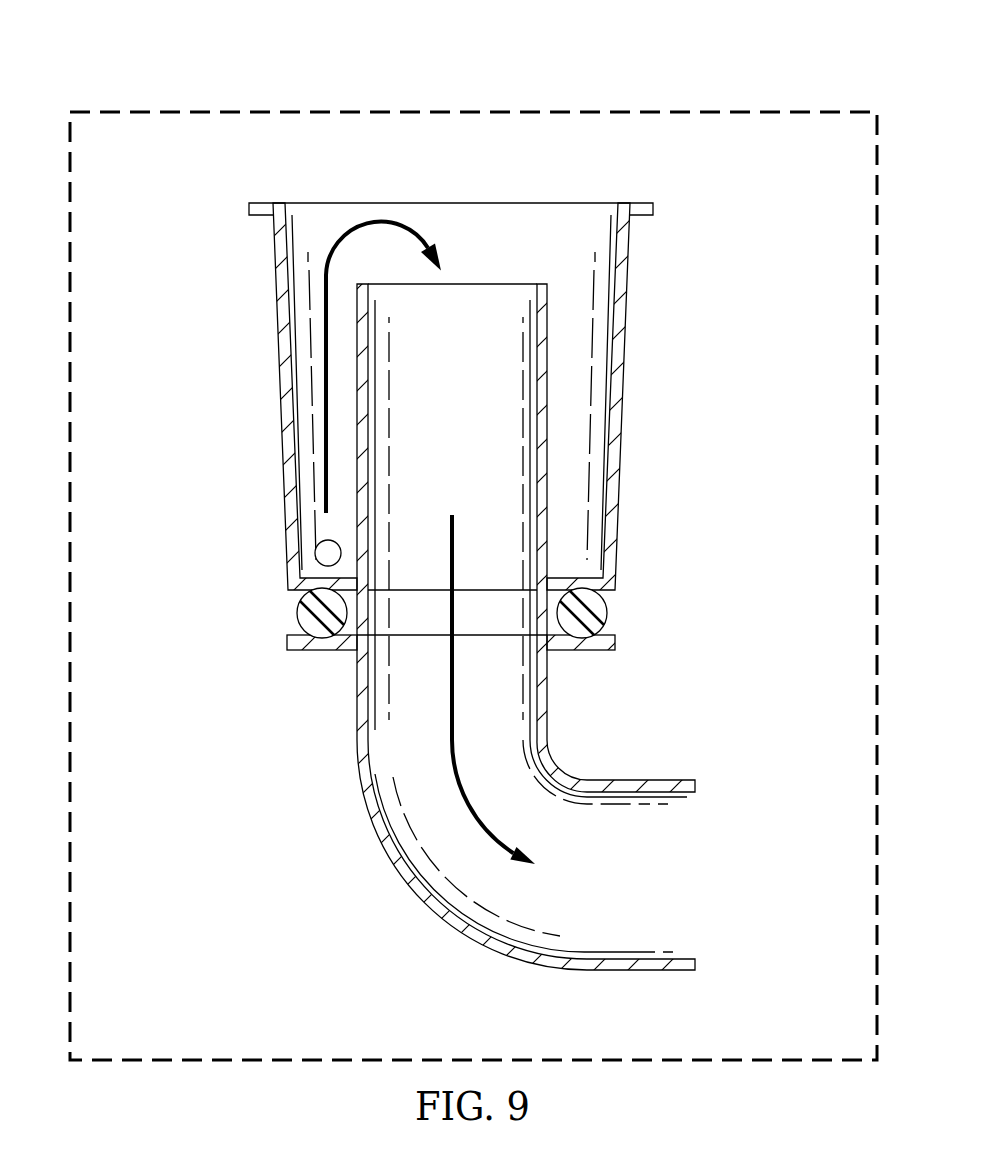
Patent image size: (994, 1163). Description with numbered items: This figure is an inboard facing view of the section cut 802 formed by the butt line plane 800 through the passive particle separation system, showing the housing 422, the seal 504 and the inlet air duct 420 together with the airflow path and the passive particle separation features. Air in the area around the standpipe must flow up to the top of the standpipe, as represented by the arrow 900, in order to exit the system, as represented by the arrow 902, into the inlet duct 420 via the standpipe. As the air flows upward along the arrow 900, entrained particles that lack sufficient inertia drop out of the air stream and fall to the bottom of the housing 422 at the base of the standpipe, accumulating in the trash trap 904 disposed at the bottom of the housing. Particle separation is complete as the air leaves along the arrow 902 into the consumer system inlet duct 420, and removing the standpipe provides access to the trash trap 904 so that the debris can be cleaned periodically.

The butt line plane 800 is at (297, 110).
The section cut 802 is at (654, 70).
The housing 422 is at (623, 400).
The inlet air duct 420 is at (673, 780).
The seal 504 is at (607, 603).
The trash trap 904 is at (316, 553).
The arrow 900 is at (374, 218).
The arrow 902 is at (450, 733).